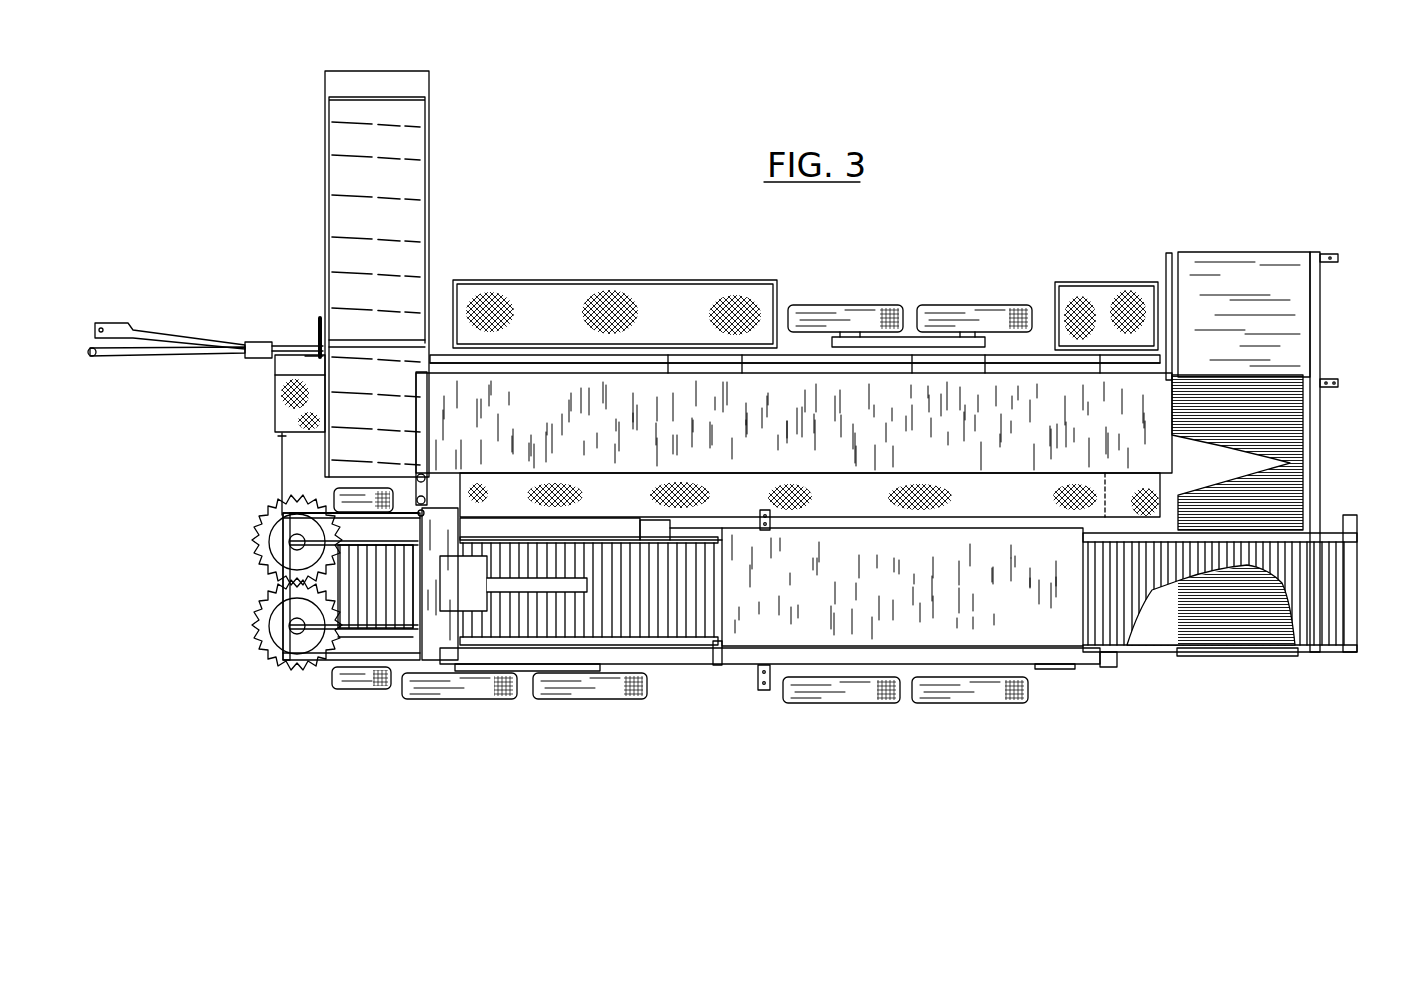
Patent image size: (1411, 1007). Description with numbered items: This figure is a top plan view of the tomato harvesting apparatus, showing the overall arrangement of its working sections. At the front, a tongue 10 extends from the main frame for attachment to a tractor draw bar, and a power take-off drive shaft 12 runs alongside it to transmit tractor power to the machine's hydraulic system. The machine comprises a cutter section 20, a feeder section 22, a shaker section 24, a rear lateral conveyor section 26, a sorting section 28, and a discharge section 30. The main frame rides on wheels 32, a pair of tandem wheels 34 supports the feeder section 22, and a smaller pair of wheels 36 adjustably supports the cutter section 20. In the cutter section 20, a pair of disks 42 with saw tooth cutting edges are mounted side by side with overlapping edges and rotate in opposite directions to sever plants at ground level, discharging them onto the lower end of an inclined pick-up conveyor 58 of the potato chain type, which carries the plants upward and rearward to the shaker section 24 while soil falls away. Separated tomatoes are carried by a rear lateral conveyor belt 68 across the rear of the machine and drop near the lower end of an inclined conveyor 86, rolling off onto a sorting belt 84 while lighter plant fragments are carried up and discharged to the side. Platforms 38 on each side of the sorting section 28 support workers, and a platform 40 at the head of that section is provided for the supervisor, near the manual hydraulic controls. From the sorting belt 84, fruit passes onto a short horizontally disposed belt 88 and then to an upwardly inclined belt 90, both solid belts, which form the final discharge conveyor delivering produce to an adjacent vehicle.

The tongue 10 is at (176, 333).
The power take-off drive shaft 12 is at (176, 357).
The cutter section 20 is at (252, 578).
The feeder section 22 is at (393, 525).
The shaker section 24 is at (1058, 677).
The rear lateral conveyor section 26 is at (1318, 528).
The sorting section 28 is at (907, 288).
The discharge section 30 is at (318, 305).
The wheels 32 is at (878, 318).
The pair of tandem wheels 34 is at (555, 690).
The smaller pair of wheels 36 is at (347, 500).
The platforms 38 is at (667, 292).
The platform 40 is at (290, 412).
The disks 42 is at (262, 541).
The inclined pick-up conveyor 58 is at (395, 618).
The rear lateral conveyor belt 68 is at (1293, 482).
The sorting belt 84 is at (858, 433).
The inclined conveyor 86 is at (1250, 265).
The horizontally disposed belt 88 is at (402, 392).
The upwardly inclined belt 90 is at (405, 222).